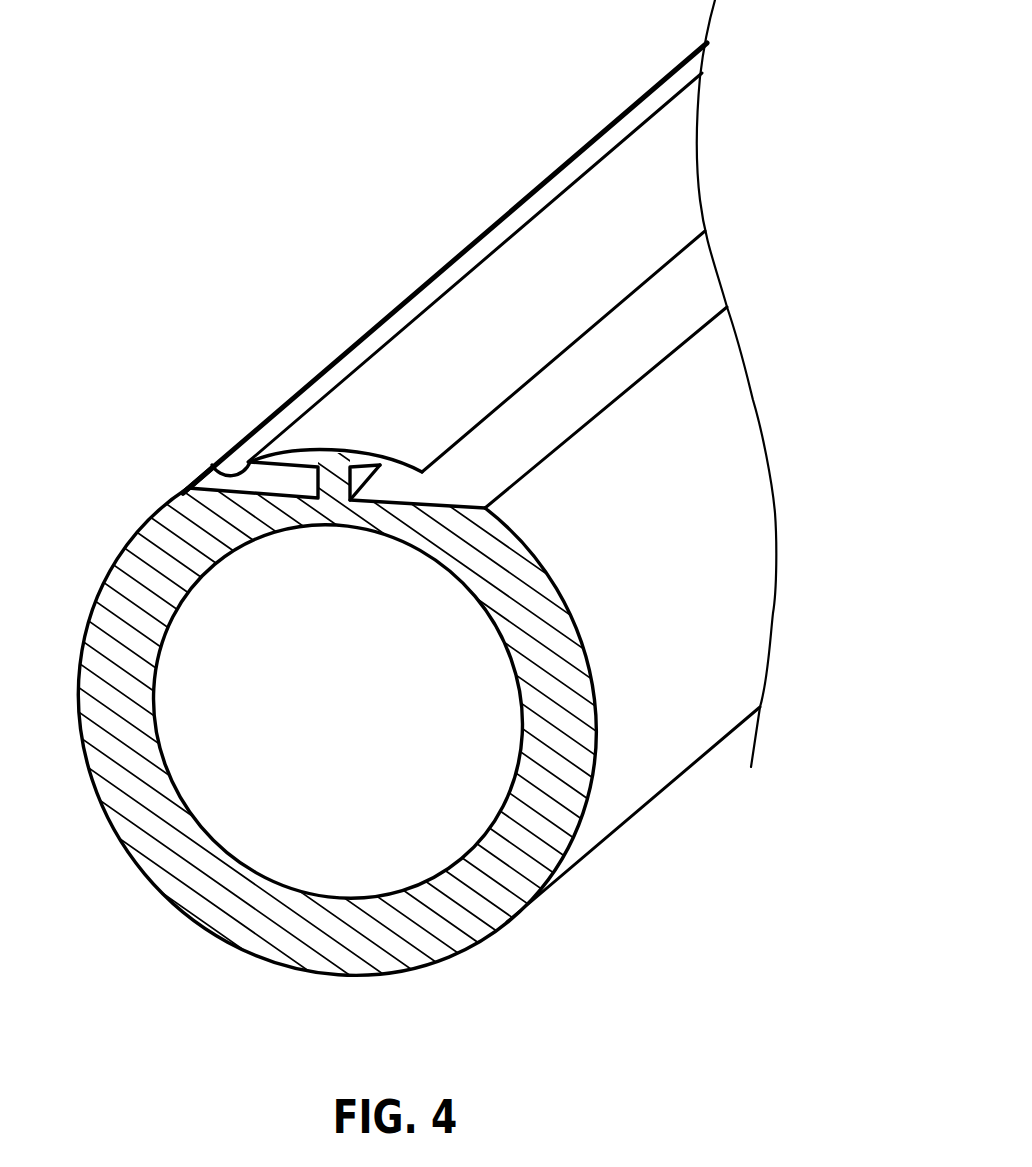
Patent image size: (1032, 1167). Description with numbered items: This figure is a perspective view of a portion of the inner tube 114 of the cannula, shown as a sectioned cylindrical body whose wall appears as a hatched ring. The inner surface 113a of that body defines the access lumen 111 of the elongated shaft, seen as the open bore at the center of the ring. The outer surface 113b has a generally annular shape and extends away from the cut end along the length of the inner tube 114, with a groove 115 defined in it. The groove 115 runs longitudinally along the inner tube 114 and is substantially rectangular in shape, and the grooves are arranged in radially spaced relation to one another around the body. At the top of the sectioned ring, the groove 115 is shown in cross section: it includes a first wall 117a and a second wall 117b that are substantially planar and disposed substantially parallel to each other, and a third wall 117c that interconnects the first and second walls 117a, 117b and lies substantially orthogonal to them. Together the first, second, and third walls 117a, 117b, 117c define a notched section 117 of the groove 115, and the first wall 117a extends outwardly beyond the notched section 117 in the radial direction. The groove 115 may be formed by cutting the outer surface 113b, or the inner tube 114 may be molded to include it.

The access lumen 111 is at (277, 835).
The inner surface 113a is at (180, 760).
The outer surface 113b is at (642, 175).
The inner tube 114 is at (422, 583).
The groove 115 is at (538, 198).
The notched section 117 is at (282, 470).
The first wall 117a is at (217, 491).
The second wall 117b is at (213, 460).
The third wall 117c is at (313, 470).